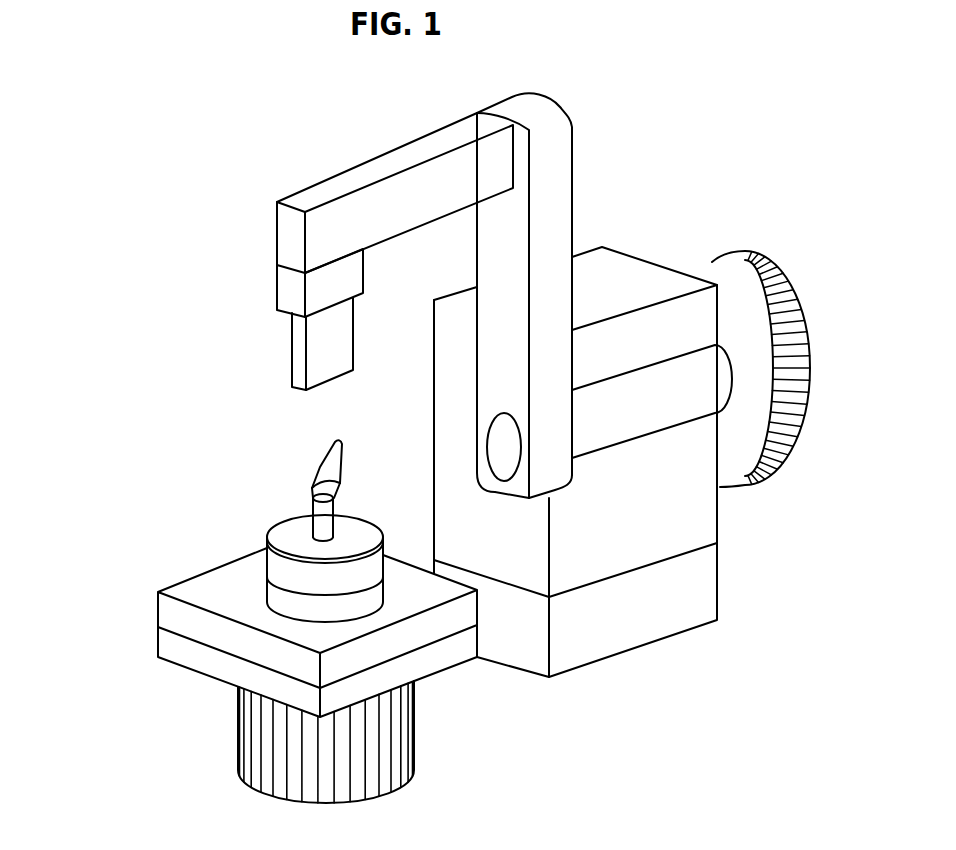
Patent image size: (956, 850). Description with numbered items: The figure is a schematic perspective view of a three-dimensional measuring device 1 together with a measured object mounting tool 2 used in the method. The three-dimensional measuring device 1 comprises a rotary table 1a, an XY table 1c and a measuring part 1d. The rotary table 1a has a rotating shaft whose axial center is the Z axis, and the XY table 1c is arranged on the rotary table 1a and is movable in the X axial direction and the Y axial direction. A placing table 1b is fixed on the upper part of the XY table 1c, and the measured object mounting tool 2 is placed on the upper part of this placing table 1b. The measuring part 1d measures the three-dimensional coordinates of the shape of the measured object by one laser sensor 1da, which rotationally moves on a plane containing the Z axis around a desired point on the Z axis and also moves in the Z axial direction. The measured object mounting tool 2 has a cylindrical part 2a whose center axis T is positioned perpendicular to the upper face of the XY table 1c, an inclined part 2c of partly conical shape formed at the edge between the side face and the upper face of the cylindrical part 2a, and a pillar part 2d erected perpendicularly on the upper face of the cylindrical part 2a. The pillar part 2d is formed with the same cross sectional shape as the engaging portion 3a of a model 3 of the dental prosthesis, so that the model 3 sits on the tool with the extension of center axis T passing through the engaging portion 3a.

The three-dimensional measuring device 1 is at (436, 448).
The rotary table 1a is at (258, 738).
The placing table 1b is at (273, 594).
The XY table 1c is at (172, 608).
The measuring part 1d is at (603, 283).
The laser sensor 1da is at (298, 349).
The measured object mounting tool 2 is at (217, 508).
The cylindrical part 2a is at (273, 567).
The inclined part 2c is at (270, 538).
The pillar part 2d is at (327, 517).
The model of the dental prosthesis 3 is at (327, 453).
The engaging portion 3a is at (337, 500).